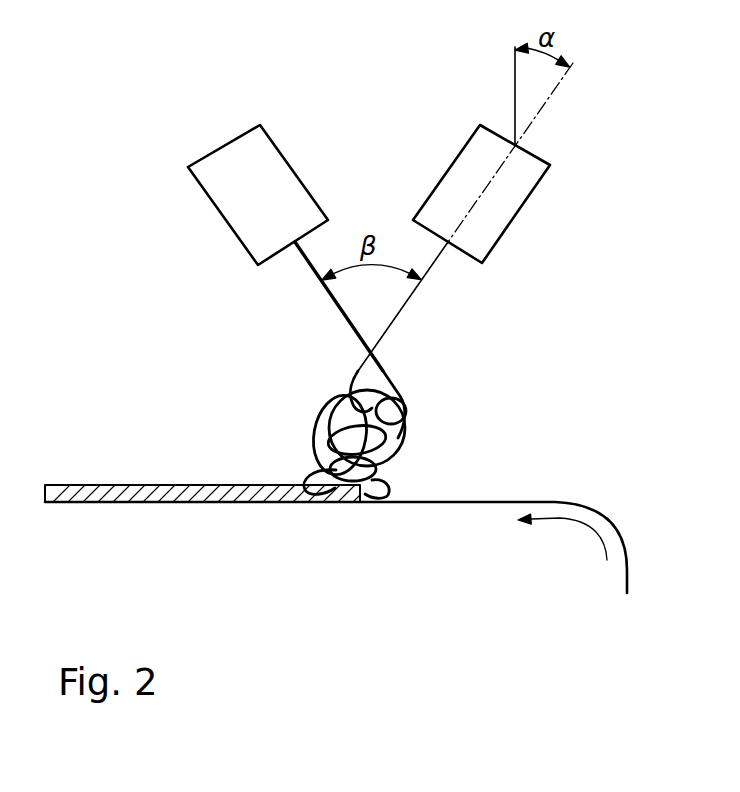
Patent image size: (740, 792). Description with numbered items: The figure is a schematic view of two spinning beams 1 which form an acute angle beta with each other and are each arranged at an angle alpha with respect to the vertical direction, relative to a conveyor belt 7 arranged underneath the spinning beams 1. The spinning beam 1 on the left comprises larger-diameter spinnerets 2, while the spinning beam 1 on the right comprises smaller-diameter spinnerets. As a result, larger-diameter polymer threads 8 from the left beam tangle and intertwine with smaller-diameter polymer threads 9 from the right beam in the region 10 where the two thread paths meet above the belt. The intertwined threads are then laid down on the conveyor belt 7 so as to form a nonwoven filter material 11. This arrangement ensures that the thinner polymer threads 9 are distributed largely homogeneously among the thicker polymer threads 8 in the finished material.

The spinning beam 1 is at (230, 210).
The spinneret 2 is at (287, 257).
The conveyor belt 7 is at (552, 502).
The larger-diameter polymer thread 8 is at (340, 303).
The smaller-diameter polymer thread 9 is at (393, 322).
The region 10 is at (428, 396).
The nonwoven filter material 11 is at (133, 487).